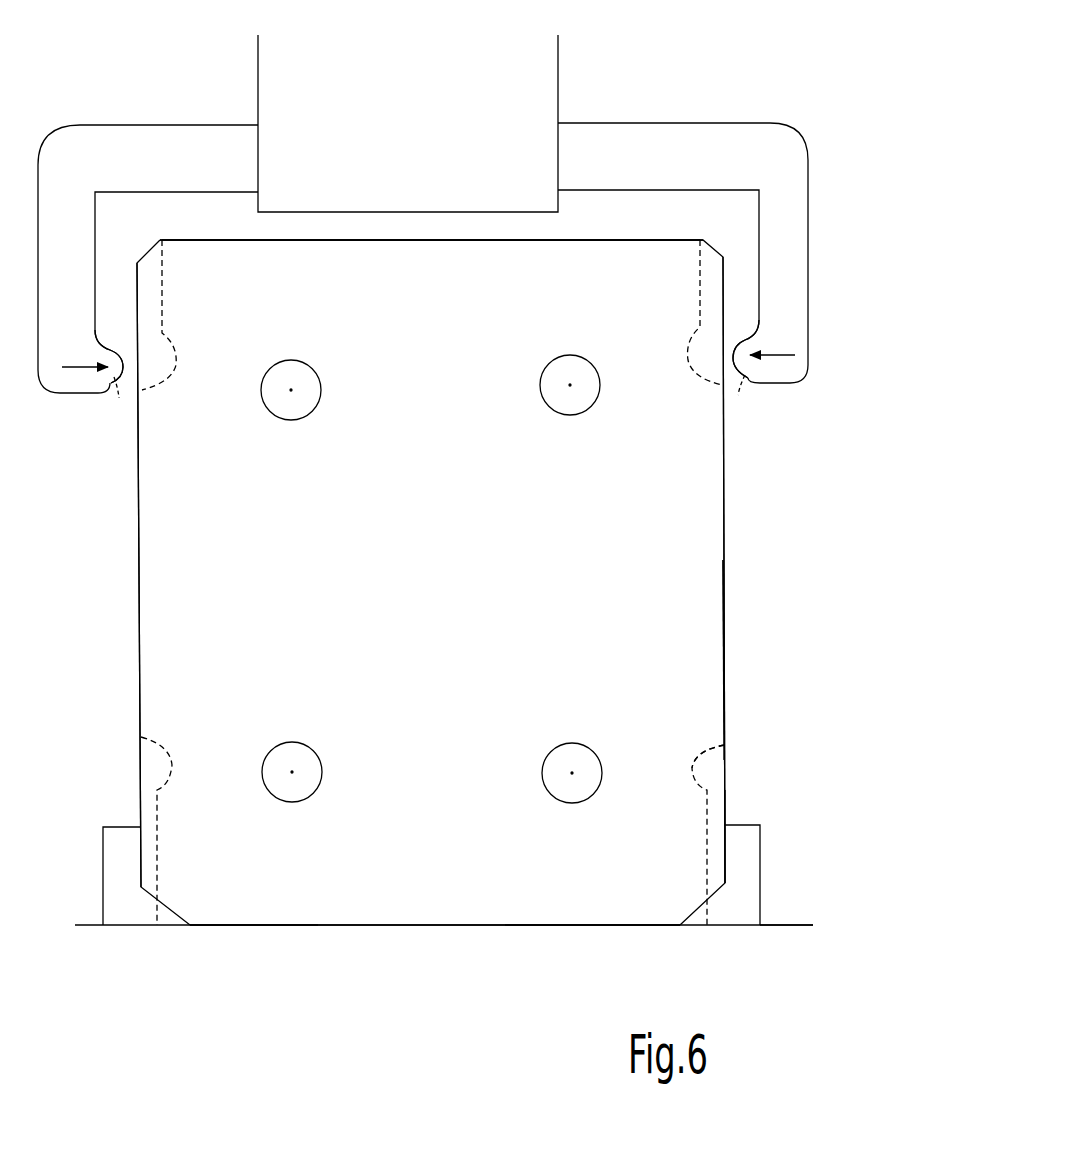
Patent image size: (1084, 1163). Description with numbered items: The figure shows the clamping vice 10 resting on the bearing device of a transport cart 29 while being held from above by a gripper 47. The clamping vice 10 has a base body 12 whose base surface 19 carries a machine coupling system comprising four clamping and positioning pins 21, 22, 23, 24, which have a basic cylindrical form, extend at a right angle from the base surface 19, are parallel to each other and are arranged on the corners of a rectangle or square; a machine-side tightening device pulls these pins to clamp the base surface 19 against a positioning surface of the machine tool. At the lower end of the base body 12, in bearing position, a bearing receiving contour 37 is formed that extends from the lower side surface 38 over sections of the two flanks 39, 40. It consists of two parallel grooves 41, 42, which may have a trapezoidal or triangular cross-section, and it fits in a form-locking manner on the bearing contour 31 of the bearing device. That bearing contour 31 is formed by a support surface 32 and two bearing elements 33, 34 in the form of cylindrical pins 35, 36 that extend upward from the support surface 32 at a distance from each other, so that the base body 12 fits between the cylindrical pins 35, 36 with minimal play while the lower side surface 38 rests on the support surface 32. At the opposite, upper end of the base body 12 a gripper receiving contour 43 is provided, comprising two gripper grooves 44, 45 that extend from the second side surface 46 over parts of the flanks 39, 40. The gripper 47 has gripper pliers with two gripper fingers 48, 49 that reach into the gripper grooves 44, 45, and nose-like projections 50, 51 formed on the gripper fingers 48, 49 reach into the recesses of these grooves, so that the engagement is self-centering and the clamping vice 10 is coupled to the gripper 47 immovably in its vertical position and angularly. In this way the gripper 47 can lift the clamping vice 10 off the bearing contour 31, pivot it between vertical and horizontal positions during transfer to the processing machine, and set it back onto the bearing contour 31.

The clamping vice 10 is at (745, 605).
The base body 12 is at (437, 529).
The base surface 19 is at (685, 660).
The clamping and positioning pin 21 is at (318, 368).
The clamping and positioning pin 22 is at (548, 358).
The clamping and positioning pin 23 is at (310, 720).
The clamping and positioning pin 24 is at (560, 730).
The transport cart 29 is at (772, 792).
The bearing contour 31 is at (503, 965).
The support surface 32 is at (778, 925).
The bearing element 33 is at (187, 958).
The bearing element 34 is at (648, 943).
The cylindrical pin 35 is at (123, 892).
The cylindrical pin 36 is at (735, 895).
The bearing receiving contour 37 is at (750, 738).
The lower side surface 38 is at (285, 925).
The flank 39 is at (140, 641).
The flank 40 is at (724, 555).
The groove 41 is at (150, 789).
The groove 42 is at (710, 782).
The gripper receiving contour 43 is at (545, 282).
The gripper groove 44 is at (148, 300).
The gripper groove 45 is at (712, 300).
The second side surface 46 is at (595, 240).
The gripper 47 is at (627, 92).
The gripper finger 48 is at (80, 307).
The gripper finger 49 is at (797, 282).
The nose-like projection 50 is at (112, 388).
The nose-like projection 51 is at (740, 385).